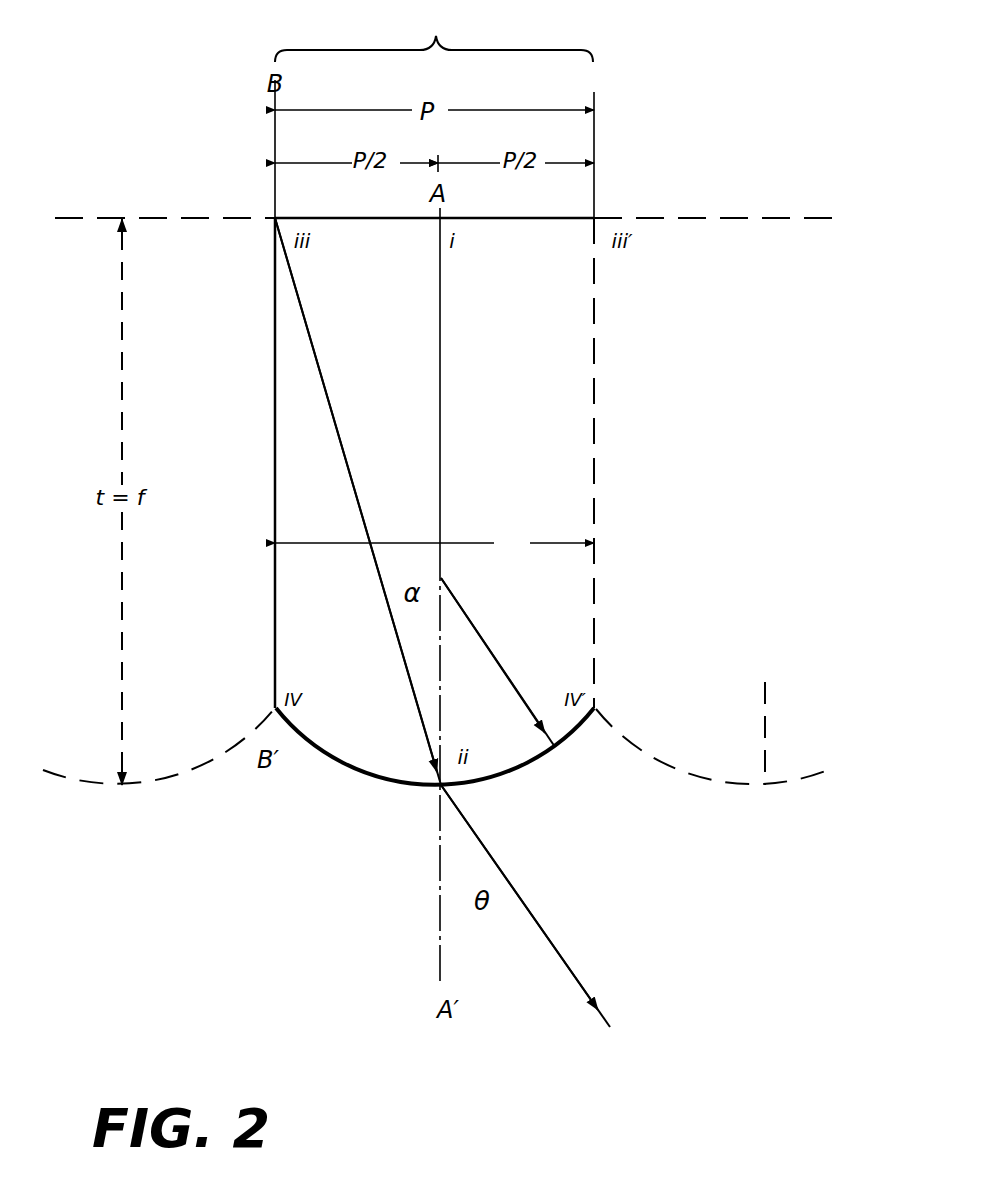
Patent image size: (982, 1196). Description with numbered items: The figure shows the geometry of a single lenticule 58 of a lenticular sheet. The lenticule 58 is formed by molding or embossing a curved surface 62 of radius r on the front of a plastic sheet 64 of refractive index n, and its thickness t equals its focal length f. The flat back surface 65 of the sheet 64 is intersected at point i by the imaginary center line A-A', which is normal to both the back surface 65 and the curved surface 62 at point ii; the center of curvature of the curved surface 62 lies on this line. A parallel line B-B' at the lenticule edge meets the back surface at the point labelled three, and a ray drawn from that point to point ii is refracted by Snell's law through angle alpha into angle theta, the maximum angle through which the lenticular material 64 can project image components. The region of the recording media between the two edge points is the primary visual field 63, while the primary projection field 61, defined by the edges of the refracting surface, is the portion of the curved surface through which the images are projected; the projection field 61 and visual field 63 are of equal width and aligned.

The lenticule 58 is at (212, 808).
The primary projection field 61 is at (434, 544).
The curved surface 62 is at (323, 752).
The primary visual field 63 is at (434, 356).
The plastic sheet 64 is at (716, 512).
The flat back surface 65 is at (760, 226).